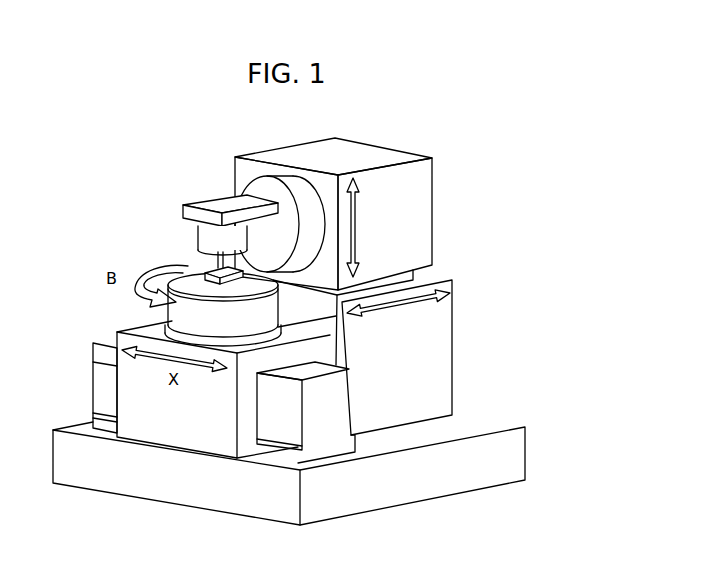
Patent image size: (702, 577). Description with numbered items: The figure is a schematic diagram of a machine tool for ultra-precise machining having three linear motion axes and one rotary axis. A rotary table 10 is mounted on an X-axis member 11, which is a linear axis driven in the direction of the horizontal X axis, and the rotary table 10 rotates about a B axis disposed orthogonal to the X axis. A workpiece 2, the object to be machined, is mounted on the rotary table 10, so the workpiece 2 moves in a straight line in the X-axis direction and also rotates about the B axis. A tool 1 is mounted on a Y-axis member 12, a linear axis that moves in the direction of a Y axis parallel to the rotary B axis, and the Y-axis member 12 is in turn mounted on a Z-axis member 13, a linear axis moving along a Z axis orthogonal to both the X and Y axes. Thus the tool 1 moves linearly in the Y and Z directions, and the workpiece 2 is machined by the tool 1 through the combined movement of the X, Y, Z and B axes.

The tool 1 is at (213, 266).
The workpiece 2 is at (203, 273).
The rotary table 10 is at (180, 317).
The X-axis member 11 is at (187, 432).
The Y-axis member 12 is at (427, 212).
The Z-axis member 13 is at (447, 363).